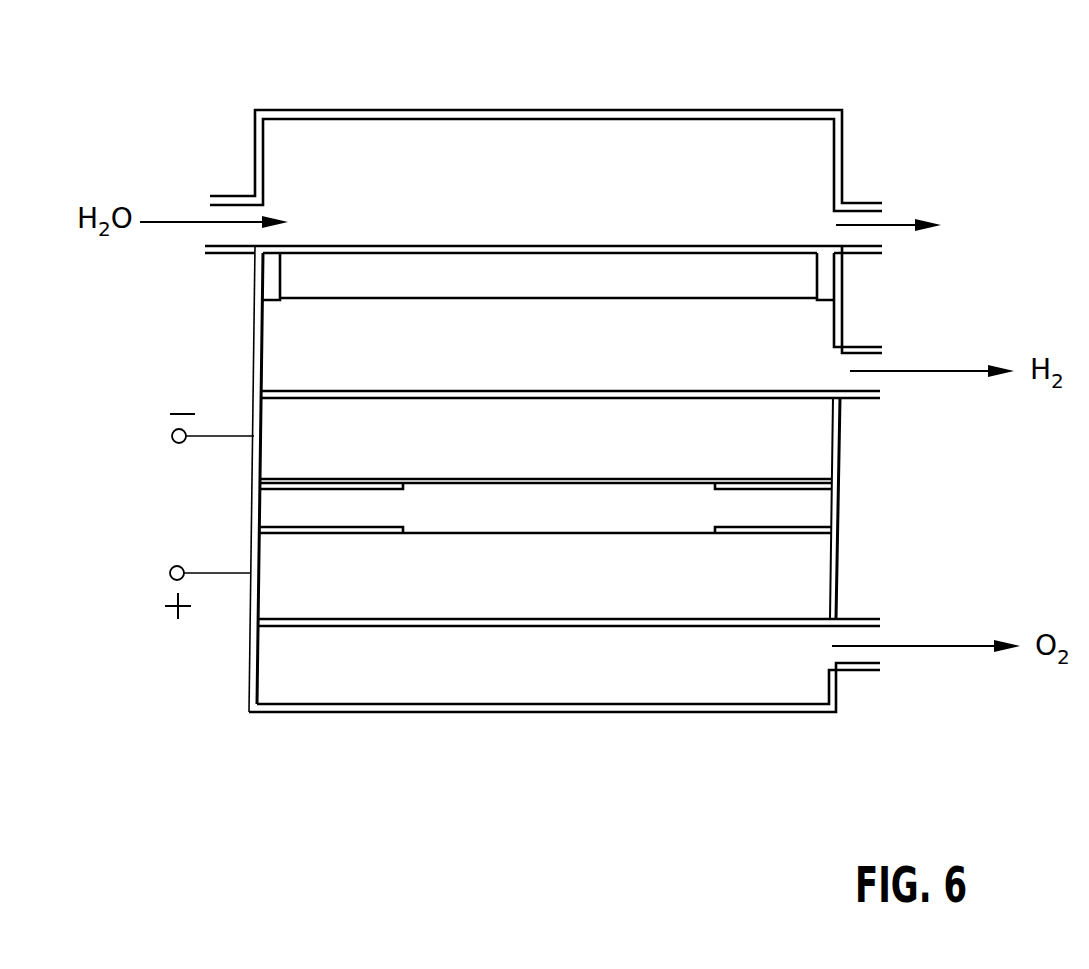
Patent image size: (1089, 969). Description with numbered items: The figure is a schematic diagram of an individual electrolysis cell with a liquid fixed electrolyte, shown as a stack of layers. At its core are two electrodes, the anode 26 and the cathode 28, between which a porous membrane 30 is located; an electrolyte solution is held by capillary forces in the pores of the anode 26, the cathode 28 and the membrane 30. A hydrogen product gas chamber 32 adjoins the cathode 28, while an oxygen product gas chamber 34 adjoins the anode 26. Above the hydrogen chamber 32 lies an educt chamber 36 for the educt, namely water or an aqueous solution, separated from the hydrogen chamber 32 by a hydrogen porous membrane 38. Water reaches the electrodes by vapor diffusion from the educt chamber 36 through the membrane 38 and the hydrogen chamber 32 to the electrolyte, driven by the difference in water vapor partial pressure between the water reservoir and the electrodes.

The anode 26 is at (815, 575).
The cathode 28 is at (815, 436).
The porous membrane 30 is at (272, 502).
The hydrogen product gas chamber 32 is at (276, 333).
The oxygen product gas chamber 34 is at (379, 697).
The educt chamber 36 is at (362, 122).
The hydrogen porous membrane 38 is at (817, 274).